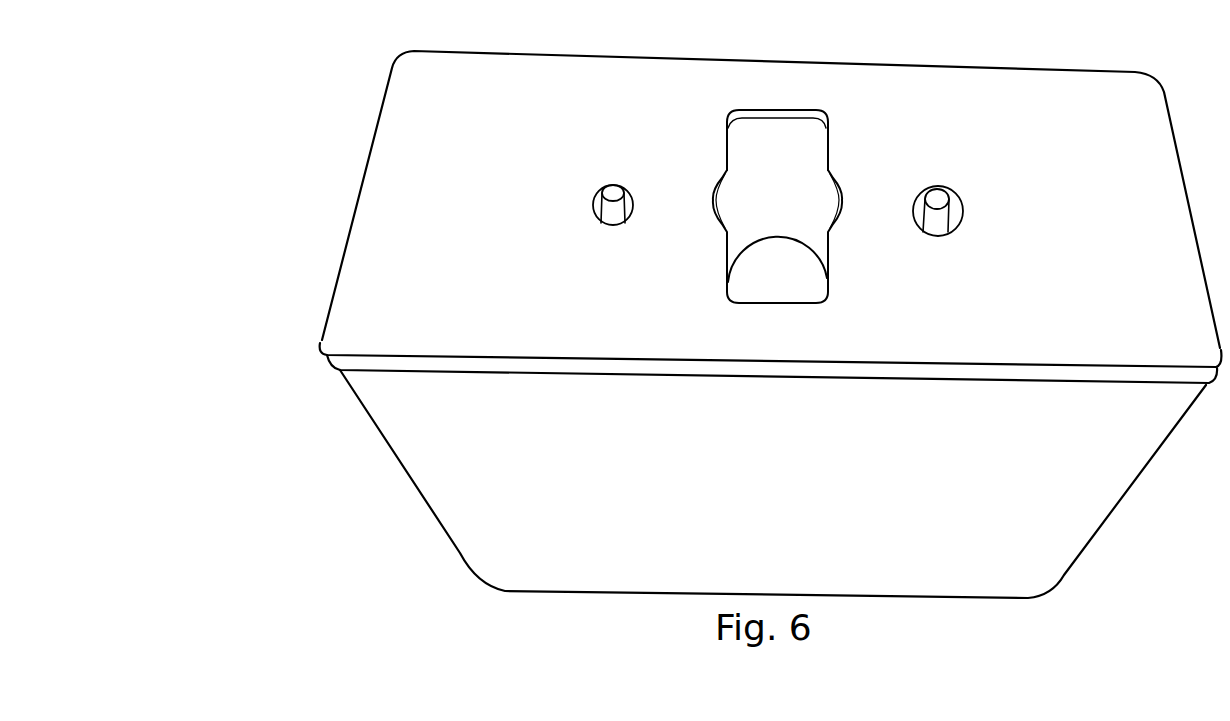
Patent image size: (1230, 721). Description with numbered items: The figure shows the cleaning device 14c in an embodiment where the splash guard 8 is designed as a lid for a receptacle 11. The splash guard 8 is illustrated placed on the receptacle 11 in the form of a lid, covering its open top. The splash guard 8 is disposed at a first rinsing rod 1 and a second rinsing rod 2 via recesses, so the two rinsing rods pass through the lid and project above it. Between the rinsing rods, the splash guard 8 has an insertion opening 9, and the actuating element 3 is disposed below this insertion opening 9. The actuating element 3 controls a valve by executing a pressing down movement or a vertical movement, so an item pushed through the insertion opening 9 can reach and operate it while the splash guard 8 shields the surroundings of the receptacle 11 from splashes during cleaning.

The cleaning device 14c is at (305, 237).
The splash guard 8 is at (1030, 340).
The receptacle 11 is at (489, 452).
The insertion opening 9 is at (777, 137).
The actuating element 3 is at (792, 282).
The second rinsing rod 2 is at (611, 190).
The first rinsing rod 1 is at (941, 184).